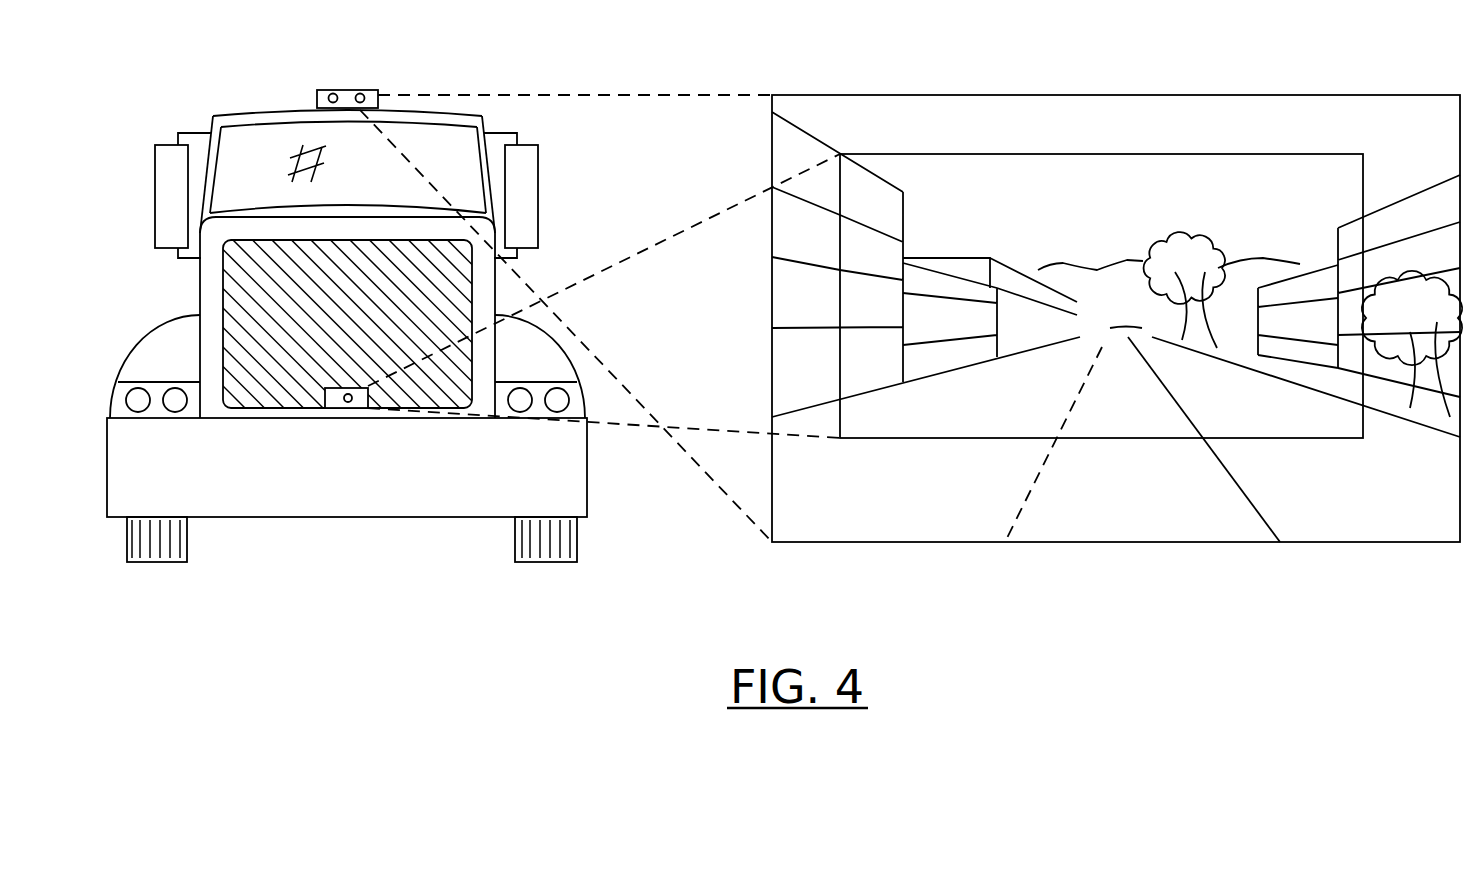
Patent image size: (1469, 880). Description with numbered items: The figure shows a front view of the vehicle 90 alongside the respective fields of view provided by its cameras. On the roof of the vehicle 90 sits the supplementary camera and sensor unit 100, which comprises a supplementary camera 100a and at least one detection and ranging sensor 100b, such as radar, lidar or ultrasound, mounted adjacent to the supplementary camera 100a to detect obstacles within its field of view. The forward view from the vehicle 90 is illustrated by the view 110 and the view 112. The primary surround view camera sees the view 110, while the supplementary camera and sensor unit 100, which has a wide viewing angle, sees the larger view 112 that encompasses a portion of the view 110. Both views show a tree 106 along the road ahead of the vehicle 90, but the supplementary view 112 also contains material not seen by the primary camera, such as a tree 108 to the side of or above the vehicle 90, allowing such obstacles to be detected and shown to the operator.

The vehicle 90 is at (252, 108).
The supplementary camera and sensor unit 100 is at (347, 90).
The supplementary camera 100a is at (362, 93).
The detection and ranging sensor 100b is at (332, 93).
The tree 106 is at (1177, 240).
The tree 108 is at (1427, 324).
The view 110 is at (1058, 153).
The view 112 is at (885, 92).